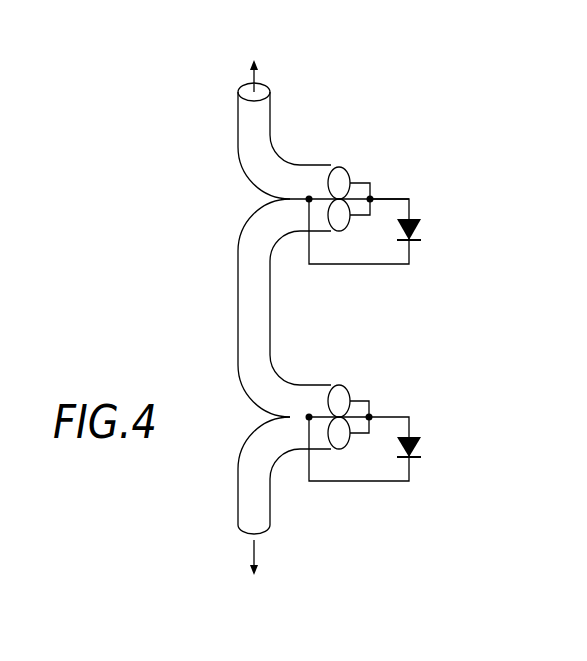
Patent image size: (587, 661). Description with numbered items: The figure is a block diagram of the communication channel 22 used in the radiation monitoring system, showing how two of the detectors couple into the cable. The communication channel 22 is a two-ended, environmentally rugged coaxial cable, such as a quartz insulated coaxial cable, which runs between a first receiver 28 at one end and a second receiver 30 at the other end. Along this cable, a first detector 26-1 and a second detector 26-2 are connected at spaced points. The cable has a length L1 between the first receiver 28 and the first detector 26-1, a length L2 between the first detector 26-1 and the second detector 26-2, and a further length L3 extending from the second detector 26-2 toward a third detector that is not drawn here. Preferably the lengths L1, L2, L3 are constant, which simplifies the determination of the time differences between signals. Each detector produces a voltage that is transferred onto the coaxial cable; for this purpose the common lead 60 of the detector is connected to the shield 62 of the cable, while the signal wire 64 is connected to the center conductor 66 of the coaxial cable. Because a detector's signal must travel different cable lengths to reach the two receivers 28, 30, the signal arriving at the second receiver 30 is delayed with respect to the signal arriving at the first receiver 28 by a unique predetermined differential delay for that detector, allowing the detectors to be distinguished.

The communication channel 22 is at (206, 250).
The length L1 is at (238, 112).
The length L2 is at (238, 300).
The length L3 is at (238, 502).
The receiver 28 is at (249, 47).
The receiver 30 is at (249, 586).
The common lead 60 is at (389, 265).
The shield 62 is at (309, 196).
The signal wire 64 is at (411, 199).
The center conductor 66 is at (372, 197).
The detector 26-1 is at (421, 232).
The detector 26-2 is at (420, 448).